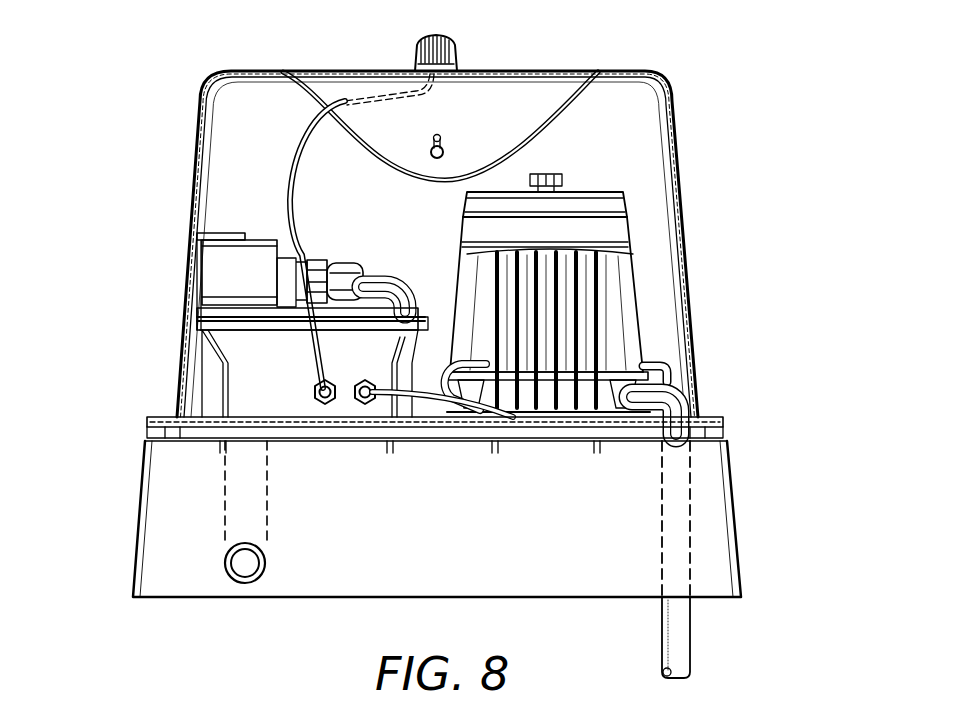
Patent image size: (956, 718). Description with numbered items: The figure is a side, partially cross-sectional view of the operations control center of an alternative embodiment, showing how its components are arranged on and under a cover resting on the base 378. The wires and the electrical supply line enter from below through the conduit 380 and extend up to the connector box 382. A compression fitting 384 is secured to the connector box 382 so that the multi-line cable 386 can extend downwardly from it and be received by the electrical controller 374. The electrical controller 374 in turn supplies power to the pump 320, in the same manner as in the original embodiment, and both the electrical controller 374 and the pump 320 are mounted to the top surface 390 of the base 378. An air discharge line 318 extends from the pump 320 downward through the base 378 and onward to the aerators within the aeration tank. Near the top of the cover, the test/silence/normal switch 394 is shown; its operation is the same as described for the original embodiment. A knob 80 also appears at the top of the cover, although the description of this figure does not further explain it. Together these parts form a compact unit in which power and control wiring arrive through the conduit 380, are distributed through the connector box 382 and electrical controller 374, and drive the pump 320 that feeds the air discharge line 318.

The knob 80 is at (455, 46).
The test/silence/normal switch 394 is at (447, 146).
The pump 320 is at (624, 302).
The top surface 390 is at (705, 414).
The connector box 382 is at (215, 280).
The compression fitting 384 is at (340, 258).
The multi-line cable 386 is at (378, 283).
The electrical controller 374 is at (237, 375).
The base 378 is at (738, 540).
The conduit 380 is at (266, 551).
The air discharge line 318 is at (680, 500).